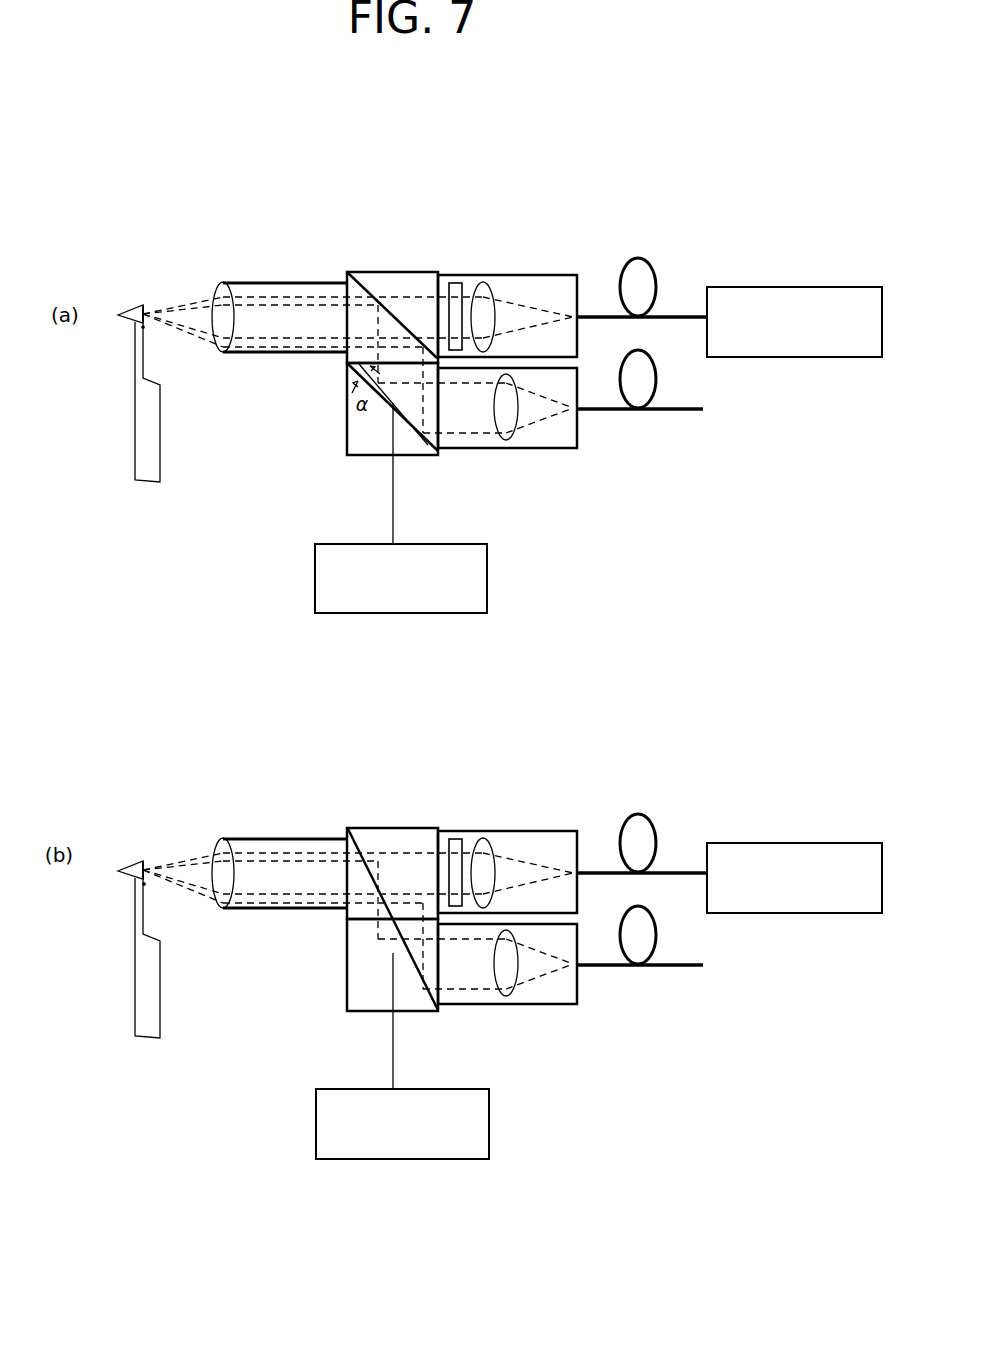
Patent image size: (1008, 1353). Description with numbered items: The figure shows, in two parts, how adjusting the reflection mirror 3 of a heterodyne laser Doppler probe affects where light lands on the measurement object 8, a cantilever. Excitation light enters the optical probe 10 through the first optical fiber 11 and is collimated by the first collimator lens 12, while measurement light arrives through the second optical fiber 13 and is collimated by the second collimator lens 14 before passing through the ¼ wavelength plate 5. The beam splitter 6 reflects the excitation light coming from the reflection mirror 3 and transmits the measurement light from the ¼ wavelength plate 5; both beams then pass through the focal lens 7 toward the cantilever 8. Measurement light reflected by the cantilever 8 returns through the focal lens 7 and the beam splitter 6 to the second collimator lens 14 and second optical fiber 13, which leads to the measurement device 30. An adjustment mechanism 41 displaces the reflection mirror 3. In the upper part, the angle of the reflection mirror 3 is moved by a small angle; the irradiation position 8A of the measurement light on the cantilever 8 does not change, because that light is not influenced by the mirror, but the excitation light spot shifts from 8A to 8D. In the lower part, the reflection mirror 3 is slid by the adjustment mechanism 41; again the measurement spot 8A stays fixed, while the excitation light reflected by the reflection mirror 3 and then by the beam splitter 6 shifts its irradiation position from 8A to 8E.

The reflection mirror 3 is at (429, 462).
The ¼ wavelength plate 5 is at (457, 282).
The beam splitter 6 is at (358, 274).
The focal lens 7 is at (223, 282).
The measurement object 8 is at (136, 307).
The irradiation position of the measurement light 8A is at (145, 310).
The shifted irradiation position of the excitation light 8D is at (144, 328).
The shifted irradiation position of the excitation light 8E is at (145, 885).
The optical probe 10 is at (550, 266).
The first optical fiber 11 is at (677, 407).
The first collimator lens 12 is at (506, 441).
The second optical fiber 13 is at (677, 316).
The second collimator lens 14 is at (485, 281).
The measurement device 30 is at (793, 287).
The adjustment mechanism 41 is at (487, 580).